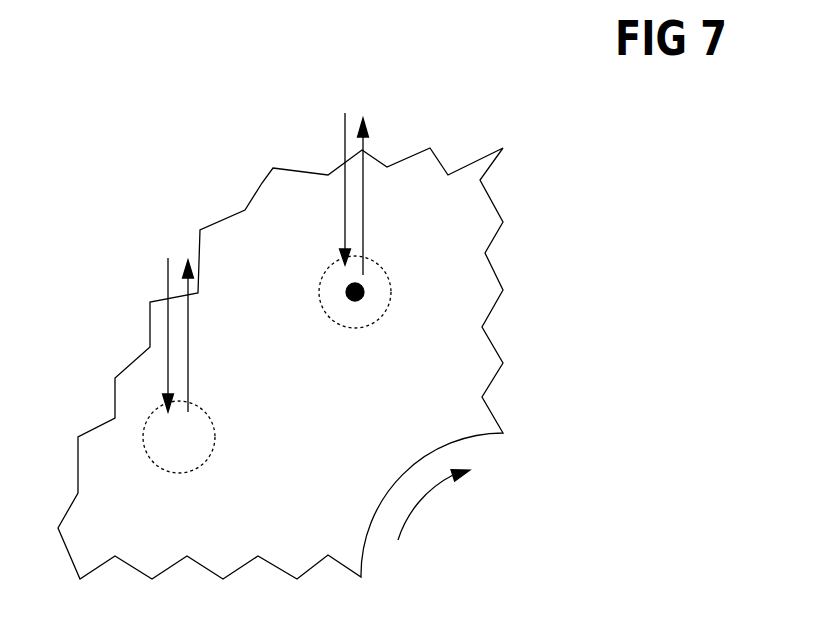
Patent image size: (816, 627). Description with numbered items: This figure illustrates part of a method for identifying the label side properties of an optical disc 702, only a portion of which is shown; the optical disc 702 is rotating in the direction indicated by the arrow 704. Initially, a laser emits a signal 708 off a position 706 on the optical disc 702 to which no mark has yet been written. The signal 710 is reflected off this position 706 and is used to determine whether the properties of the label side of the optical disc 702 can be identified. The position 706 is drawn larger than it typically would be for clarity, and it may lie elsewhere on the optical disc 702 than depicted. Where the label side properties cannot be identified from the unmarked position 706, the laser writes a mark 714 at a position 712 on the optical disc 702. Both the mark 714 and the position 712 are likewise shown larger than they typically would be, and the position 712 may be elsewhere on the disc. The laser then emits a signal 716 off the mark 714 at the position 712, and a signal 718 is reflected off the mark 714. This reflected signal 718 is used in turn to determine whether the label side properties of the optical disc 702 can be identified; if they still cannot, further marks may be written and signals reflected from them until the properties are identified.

The optical disc 702 is at (137, 541).
The arrow 704 is at (405, 517).
The position 706 is at (179, 472).
The signal 708 is at (157, 297).
The signal 710 is at (188, 377).
The position 712 is at (353, 327).
The mark 714 is at (346, 292).
The signal 716 is at (345, 152).
The signal 718 is at (363, 218).